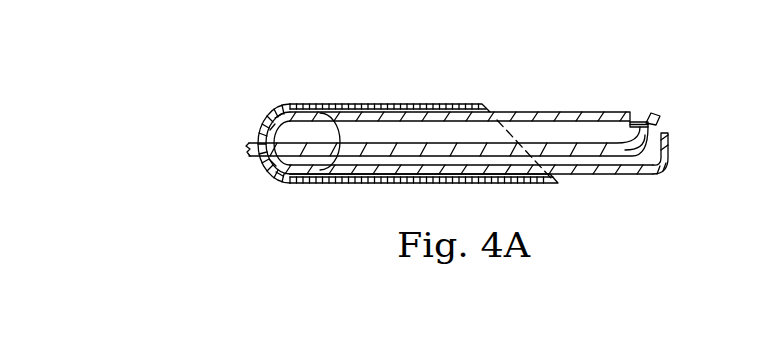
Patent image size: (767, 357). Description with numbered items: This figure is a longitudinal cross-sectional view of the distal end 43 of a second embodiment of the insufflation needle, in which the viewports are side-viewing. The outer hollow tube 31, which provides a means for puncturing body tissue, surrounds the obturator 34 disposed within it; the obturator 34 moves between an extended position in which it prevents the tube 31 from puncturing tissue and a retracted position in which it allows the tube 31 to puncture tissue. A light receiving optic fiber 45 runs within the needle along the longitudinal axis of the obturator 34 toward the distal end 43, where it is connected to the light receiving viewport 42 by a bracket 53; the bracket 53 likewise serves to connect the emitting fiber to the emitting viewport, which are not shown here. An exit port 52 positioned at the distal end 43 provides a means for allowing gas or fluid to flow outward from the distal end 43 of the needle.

The hollow tube 31 is at (310, 104).
The obturator 34 is at (368, 110).
The light receiving optic fiber 45 is at (373, 148).
The light receiving viewport 42 is at (638, 116).
The exit port 52 is at (666, 127).
The distal end 43 is at (673, 145).
The bracket 53 is at (652, 140).